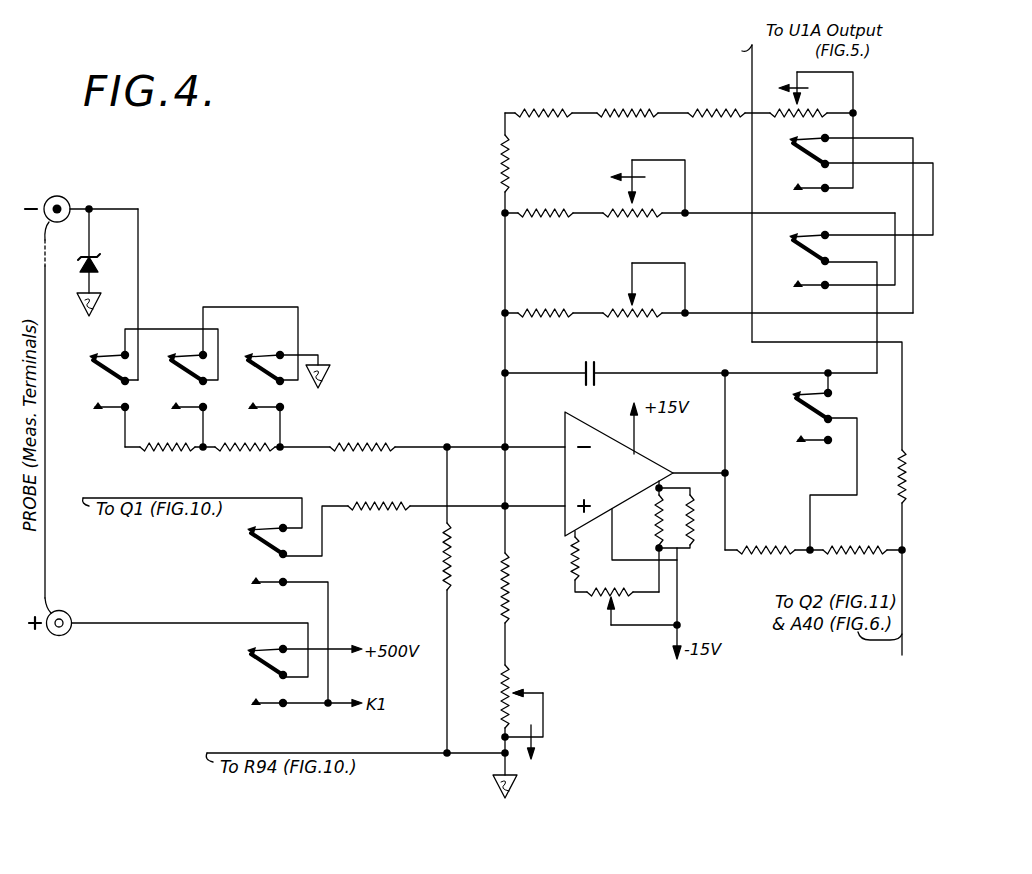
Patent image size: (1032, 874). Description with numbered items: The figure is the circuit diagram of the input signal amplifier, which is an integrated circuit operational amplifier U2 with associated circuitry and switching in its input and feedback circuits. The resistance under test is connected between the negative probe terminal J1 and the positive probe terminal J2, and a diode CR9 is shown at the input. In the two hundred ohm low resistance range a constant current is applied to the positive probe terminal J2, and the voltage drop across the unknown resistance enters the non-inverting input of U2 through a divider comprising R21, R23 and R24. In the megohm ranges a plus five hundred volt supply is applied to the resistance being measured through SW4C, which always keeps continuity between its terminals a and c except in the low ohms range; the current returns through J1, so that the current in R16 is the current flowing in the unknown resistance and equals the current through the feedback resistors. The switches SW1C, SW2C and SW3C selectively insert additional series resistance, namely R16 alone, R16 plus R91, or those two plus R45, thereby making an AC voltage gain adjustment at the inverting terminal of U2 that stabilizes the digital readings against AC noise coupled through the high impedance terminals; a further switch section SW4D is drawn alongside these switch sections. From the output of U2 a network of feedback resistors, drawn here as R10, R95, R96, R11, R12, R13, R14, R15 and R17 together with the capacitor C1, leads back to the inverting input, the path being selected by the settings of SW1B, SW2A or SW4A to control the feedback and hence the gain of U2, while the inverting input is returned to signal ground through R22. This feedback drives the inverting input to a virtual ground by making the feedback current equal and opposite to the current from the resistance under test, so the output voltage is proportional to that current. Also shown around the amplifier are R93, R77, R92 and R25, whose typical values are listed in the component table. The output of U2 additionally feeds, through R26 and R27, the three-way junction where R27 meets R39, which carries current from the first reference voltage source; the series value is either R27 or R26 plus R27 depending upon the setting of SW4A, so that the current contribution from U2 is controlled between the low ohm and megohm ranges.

The negative probe terminal J1 is at (47, 200).
The positive probe terminal J2 is at (50, 632).
The diode CR9 is at (105, 262).
The switch SW1C is at (100, 374).
The switch SW2C is at (185, 374).
The switch SW3C is at (263, 374).
The switch section SW4D is at (256, 547).
The switch SW4C is at (259, 668).
The feedback selector switch SW1B is at (802, 156).
The feedback selector switch SW2A is at (806, 253).
The feedback selector switch SW4A is at (809, 409).
The series resistor R45 is at (167, 457).
The series resistor R91 is at (245, 457).
The series input resistor R16 is at (362, 434).
The divider resistor R21 is at (379, 494).
The ground resistor R22 is at (425, 600).
The divider resistor R23 is at (488, 588).
The divider resistor R24 is at (522, 712).
The resistor R17 is at (485, 163).
The resistor R10 is at (543, 101).
The resistor R95 is at (627, 101).
The resistor R96 is at (716, 101).
The resistor R11 is at (811, 103).
The resistor R12 is at (545, 223).
The resistor R13 is at (644, 198).
The resistor R14 is at (545, 323).
The resistor R15 is at (644, 300).
The reference current resistor R39 is at (921, 476).
The series output resistor R26 is at (766, 539).
The series output resistor R27 is at (855, 539).
The capacitor C1 is at (691, 382).
The operational amplifier U2 is at (618, 474).
The resistor R93 is at (643, 520).
The resistor R77 is at (707, 520).
The resistor R92 is at (561, 555).
The resistor R25 is at (615, 595).